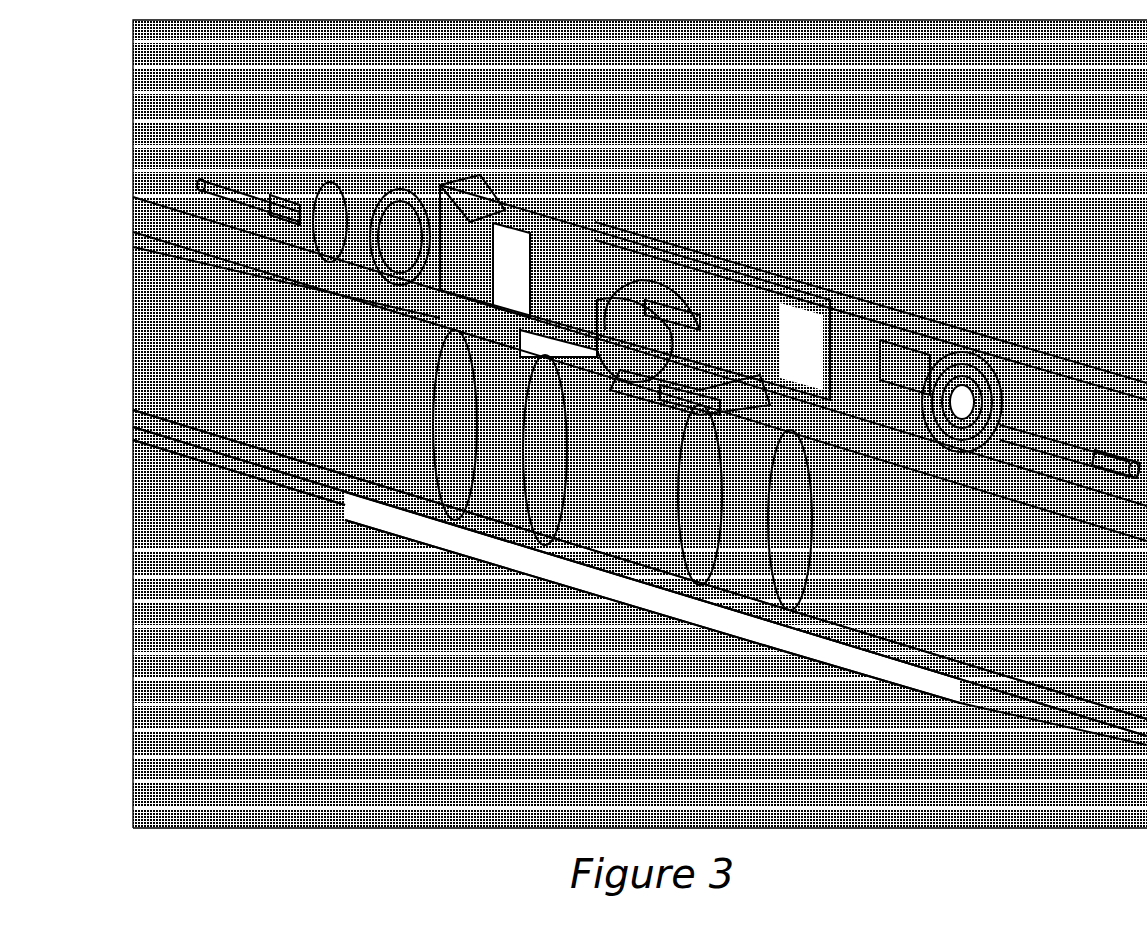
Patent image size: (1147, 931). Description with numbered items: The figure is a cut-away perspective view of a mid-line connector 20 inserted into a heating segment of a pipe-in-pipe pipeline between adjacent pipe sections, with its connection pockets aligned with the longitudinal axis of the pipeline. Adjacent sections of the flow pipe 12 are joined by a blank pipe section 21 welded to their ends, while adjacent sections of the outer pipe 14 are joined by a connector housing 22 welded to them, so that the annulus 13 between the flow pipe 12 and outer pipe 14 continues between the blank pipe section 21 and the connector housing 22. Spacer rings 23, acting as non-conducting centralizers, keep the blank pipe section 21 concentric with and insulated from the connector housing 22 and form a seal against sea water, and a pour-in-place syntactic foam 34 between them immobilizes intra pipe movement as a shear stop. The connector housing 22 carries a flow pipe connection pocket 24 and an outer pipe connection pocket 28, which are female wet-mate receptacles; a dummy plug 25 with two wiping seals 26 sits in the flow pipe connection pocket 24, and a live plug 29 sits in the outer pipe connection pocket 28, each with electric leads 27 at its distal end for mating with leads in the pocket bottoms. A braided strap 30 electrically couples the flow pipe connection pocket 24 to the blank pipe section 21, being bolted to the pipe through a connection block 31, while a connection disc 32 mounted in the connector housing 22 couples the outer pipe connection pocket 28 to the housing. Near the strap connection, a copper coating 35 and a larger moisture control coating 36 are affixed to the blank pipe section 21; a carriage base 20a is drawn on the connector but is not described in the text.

The flow pipe 12 is at (183, 393).
The annulus 13 is at (283, 463).
The outer pipe 14 is at (237, 463).
The mid-line connector 20 is at (852, 206).
The carriage base 20a is at (690, 387).
The blank pipe section 21 is at (710, 545).
The connector housing 22 is at (455, 540).
The spacer rings 23 is at (670, 300).
The flow pipe connection pocket 24 is at (817, 347).
The dummy plug 25 is at (907, 380).
The wiping seals 26 is at (405, 165).
The electric leads 27 is at (480, 190).
The outer pipe connection pocket 28 is at (520, 240).
The live plug 29 is at (423, 212).
The braided strap 30 is at (677, 407).
The connection block 31 is at (647, 307).
The connection disc 32 is at (543, 350).
The syntactic foam 34 is at (227, 267).
The copper coating 35 is at (683, 403).
The moisture control coating 36 is at (620, 520).